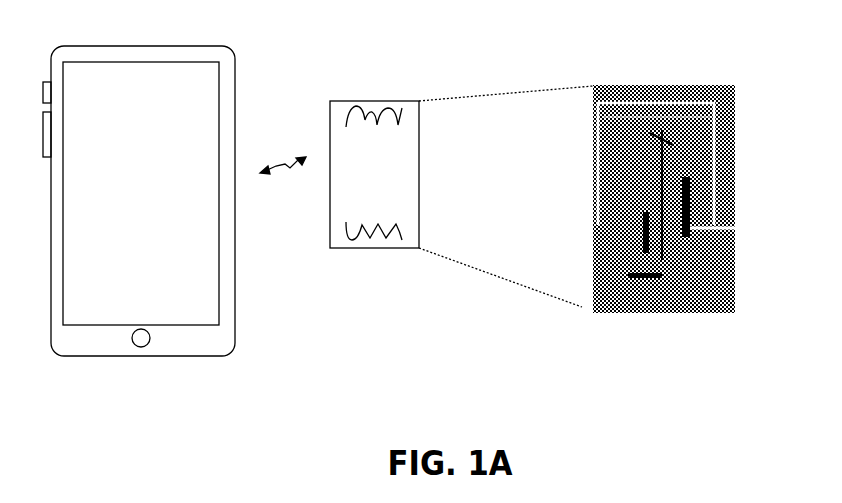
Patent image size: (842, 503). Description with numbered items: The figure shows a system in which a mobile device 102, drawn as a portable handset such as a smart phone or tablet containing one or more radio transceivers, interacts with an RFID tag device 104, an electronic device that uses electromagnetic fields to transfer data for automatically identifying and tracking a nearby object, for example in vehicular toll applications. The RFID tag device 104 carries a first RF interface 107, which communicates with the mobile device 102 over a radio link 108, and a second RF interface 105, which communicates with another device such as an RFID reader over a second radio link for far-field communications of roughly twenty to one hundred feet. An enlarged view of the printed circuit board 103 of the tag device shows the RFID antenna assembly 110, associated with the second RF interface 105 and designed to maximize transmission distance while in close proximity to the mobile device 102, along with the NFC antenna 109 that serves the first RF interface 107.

The mobile device 102 is at (88, 45).
The printed circuit board 103 is at (632, 313).
The RFID tag device 104 is at (330, 248).
The second RF interface 105 is at (365, 110).
The first RF interface 107 is at (362, 228).
The radio link 108 is at (264, 178).
The NFC antenna 109 is at (640, 212).
The RFID antenna assembly 110 is at (626, 98).